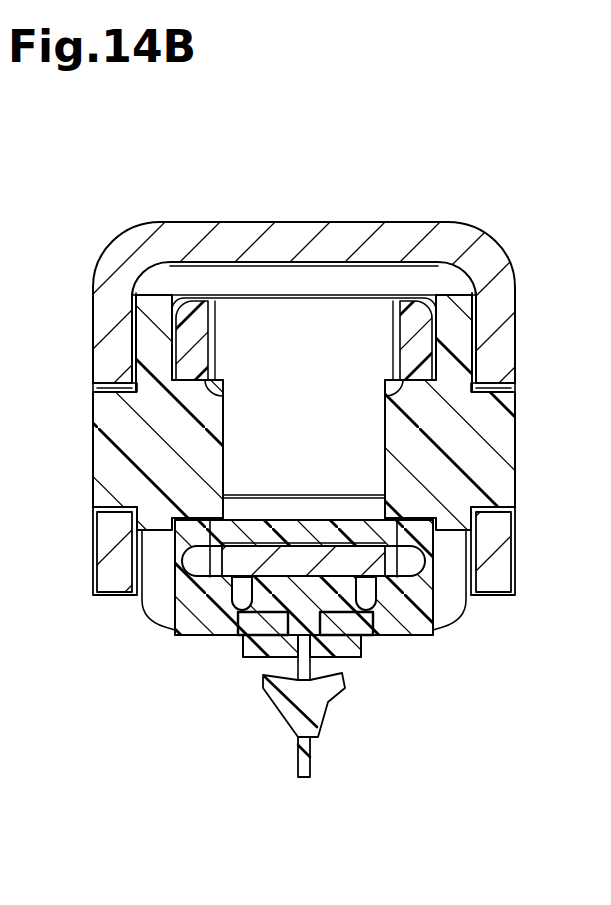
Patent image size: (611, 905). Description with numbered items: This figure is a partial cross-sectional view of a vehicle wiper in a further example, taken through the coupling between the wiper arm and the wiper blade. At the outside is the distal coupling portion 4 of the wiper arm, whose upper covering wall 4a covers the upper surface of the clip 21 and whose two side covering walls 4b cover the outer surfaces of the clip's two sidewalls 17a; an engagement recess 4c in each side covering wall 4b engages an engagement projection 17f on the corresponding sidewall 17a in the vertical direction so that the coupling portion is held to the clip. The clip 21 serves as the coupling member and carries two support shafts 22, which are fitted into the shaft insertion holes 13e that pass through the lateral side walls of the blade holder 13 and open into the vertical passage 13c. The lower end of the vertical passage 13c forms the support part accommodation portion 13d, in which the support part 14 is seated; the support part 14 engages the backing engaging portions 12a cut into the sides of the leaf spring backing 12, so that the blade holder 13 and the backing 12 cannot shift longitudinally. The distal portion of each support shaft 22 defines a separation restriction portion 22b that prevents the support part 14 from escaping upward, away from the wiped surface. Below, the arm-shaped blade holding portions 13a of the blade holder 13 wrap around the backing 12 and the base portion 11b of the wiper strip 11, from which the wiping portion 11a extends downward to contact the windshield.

The distal coupling portion 4 is at (115, 252).
The upper covering wall 4a is at (226, 253).
The side covering wall 4b is at (99, 337).
The engagement recess 4c is at (103, 508).
The sidewall 17a is at (145, 300).
The engagement projection 17f is at (103, 386).
The clip 21 is at (476, 327).
The blade holder 13 is at (436, 308).
The vertical passage 13c is at (393, 310).
The shaft insertion hole 13e is at (220, 388).
The support part accommodation portion 13d is at (378, 523).
The blade holding portion 13a is at (213, 633).
The support shaft 22 is at (225, 422).
The separation restriction portion 22b is at (225, 522).
The support part 14 is at (288, 512).
The backing 12 is at (265, 552).
The backing engaging portion 12a is at (198, 578).
The wiper strip 11 is at (328, 717).
The wiping portion 11a is at (311, 763).
The base portion 11b is at (257, 633).